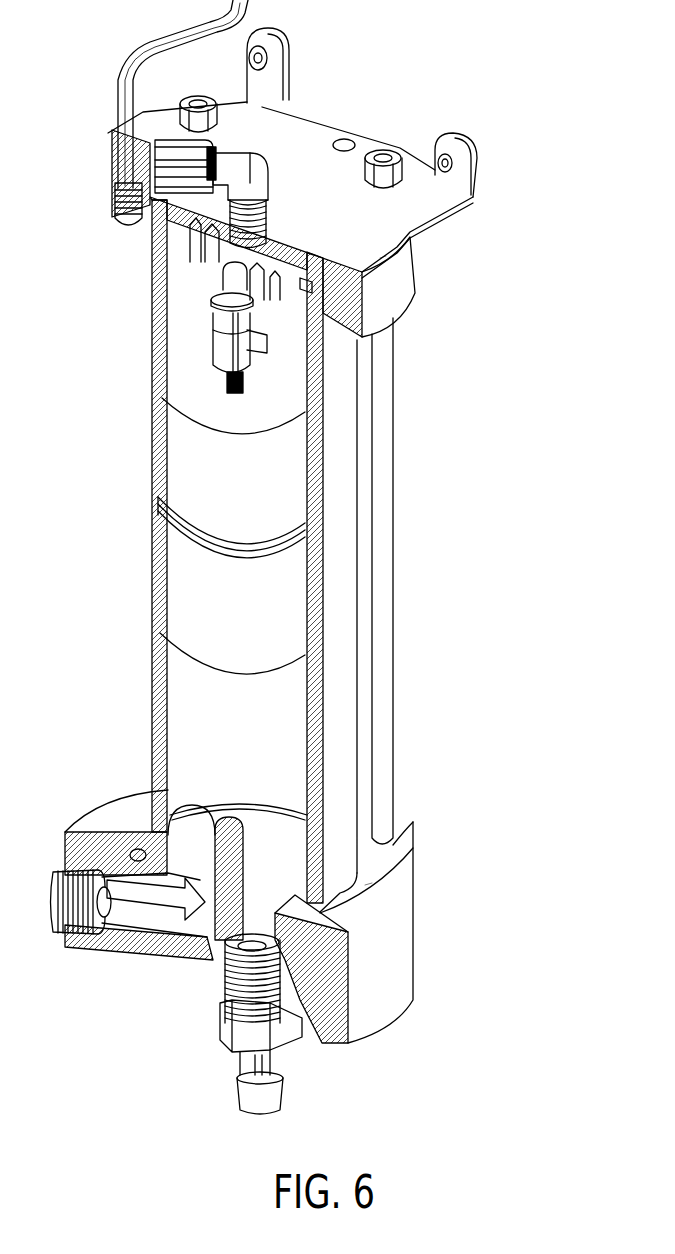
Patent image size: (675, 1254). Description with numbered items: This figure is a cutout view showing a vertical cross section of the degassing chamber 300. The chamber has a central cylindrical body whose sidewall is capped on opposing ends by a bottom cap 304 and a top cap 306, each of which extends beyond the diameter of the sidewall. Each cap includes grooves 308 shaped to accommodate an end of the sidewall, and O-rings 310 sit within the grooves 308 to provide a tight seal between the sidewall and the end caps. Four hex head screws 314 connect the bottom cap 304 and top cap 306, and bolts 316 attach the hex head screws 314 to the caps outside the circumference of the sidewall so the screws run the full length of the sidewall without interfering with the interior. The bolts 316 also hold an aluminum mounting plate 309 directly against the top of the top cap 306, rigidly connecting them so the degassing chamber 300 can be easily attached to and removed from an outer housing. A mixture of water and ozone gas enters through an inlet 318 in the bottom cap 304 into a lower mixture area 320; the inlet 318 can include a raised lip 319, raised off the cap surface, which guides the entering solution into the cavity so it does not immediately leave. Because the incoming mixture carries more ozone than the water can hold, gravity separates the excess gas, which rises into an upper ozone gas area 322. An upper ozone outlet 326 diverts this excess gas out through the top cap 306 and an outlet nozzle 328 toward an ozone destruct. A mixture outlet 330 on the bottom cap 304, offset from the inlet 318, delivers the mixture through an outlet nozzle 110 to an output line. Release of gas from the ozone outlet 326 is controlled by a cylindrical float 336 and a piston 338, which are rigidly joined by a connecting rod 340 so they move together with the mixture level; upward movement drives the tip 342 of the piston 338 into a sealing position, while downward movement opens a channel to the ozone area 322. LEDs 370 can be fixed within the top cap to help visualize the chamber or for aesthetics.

The degassing chamber 300 is at (540, 189).
The bottom cap 304 is at (393, 940).
The top cap 306 is at (383, 297).
The grooves 308 is at (306, 288).
The aluminum mounting plate 309 is at (327, 130).
The O-rings 310 is at (383, 262).
The hex head screws 314 is at (387, 633).
The bolts 316 is at (197, 97).
The inlet 318 is at (137, 890).
The raised lip 319 is at (180, 810).
The lower mixture area 320 is at (279, 777).
The upper ozone gas area 322 is at (175, 321).
The upper ozone outlet 326 is at (262, 207).
The outlet nozzle 328 is at (172, 157).
The mixture outlet 330 is at (283, 957).
The cylindrical float 336 is at (292, 497).
The piston 338 is at (227, 358).
The connecting rod 340 is at (227, 388).
The tip of the piston 342 is at (237, 288).
The LEDs 370 is at (117, 217).
The outlet nozzle 110 is at (240, 1040).